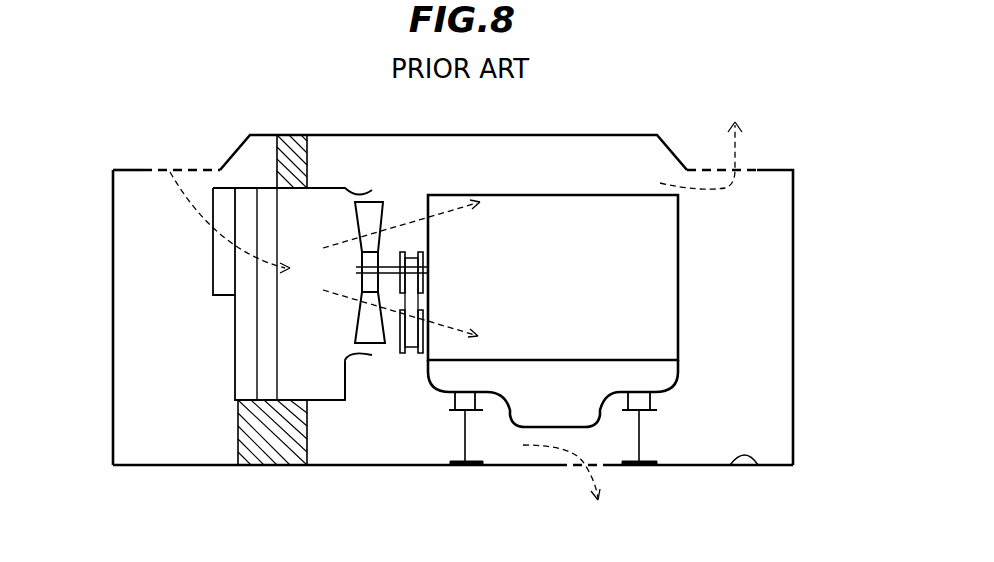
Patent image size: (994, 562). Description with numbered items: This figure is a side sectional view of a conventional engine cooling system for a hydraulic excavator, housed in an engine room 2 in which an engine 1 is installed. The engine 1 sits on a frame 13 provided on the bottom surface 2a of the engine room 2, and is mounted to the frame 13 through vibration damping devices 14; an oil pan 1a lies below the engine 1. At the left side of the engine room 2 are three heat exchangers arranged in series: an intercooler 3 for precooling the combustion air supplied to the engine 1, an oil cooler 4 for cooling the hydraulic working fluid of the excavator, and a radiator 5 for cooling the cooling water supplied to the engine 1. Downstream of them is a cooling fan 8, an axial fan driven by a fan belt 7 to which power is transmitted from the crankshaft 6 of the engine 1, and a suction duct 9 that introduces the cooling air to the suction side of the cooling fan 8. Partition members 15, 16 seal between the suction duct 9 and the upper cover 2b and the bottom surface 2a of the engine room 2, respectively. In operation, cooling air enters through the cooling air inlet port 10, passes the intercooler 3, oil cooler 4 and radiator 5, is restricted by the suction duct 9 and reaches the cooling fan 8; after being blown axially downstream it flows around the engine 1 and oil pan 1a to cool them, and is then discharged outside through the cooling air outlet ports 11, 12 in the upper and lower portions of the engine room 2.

The engine 1 is at (503, 193).
The oil pan 1a is at (543, 430).
The engine room 2 is at (592, 134).
The bottom surface 2a is at (756, 468).
The upper cover 2b is at (266, 135).
The intercooler 3 is at (222, 297).
The oil cooler 4 is at (247, 350).
The radiator 5 is at (267, 360).
The crankshaft 6 is at (421, 355).
The fan belt 7 is at (403, 355).
The cooling fan 8 is at (384, 358).
The suction duct 9 is at (348, 398).
The cooling air inlet port 10 is at (188, 170).
The cooling air outlet port 11 is at (712, 170).
The cooling air outlet port 12 is at (605, 468).
The frame 13 is at (467, 437).
The vibration damping devices 14 is at (455, 397).
The partition member 15 is at (307, 160).
The partition member 16 is at (307, 445).